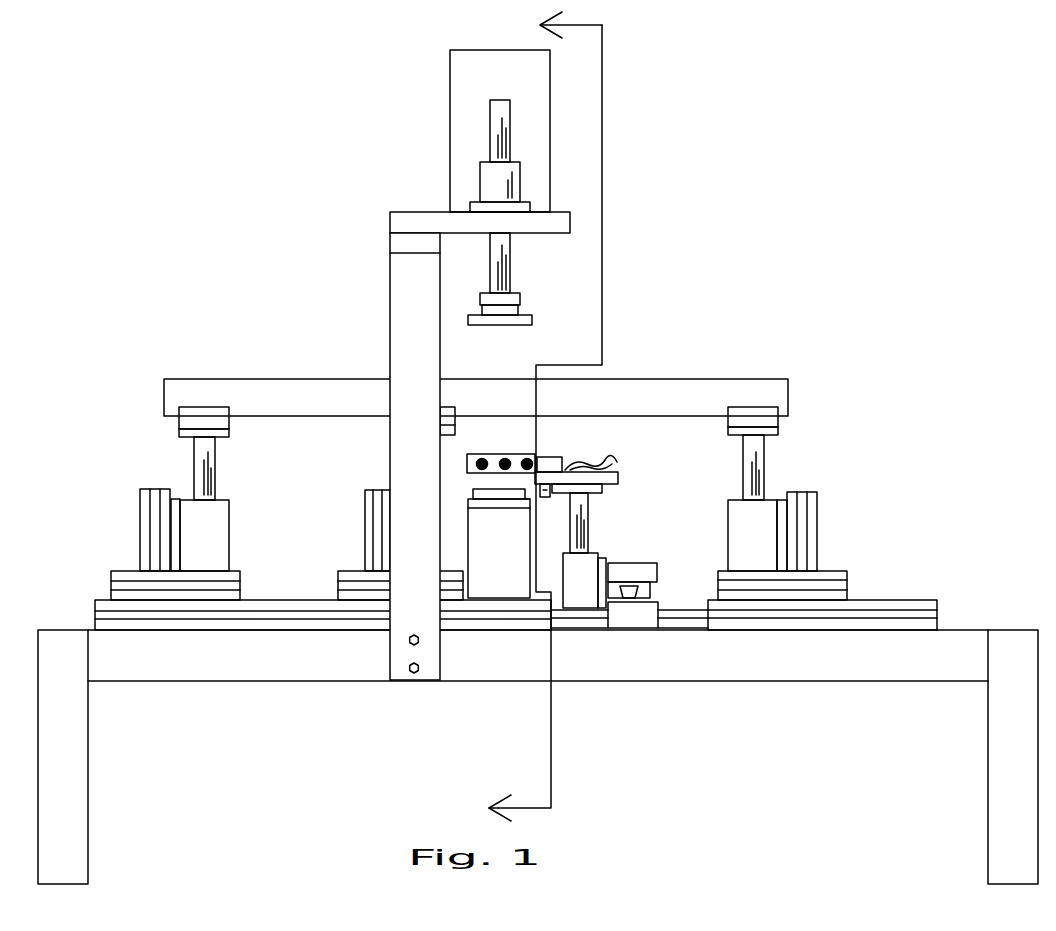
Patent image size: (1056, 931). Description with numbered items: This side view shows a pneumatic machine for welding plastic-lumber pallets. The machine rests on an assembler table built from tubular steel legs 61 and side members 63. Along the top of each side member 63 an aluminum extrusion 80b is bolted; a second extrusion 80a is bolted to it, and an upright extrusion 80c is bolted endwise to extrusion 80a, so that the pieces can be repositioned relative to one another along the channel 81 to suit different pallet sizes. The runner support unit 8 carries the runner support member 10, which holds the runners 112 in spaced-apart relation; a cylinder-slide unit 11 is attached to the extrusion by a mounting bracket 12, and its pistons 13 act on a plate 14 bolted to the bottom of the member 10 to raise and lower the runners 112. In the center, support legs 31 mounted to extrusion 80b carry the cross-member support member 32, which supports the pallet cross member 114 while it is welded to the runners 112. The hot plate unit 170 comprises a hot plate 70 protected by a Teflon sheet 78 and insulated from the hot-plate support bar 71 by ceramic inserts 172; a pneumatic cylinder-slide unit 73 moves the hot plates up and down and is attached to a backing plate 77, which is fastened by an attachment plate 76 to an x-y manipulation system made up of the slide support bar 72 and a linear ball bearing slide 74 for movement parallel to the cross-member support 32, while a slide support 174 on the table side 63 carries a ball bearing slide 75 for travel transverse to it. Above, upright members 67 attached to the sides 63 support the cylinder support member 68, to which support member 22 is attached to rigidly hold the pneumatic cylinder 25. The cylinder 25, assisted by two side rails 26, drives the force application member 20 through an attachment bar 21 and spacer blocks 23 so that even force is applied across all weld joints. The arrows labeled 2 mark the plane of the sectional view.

The section line 2- 2 is at (532, 416).
The runner support unit 8 is at (444, 386).
The runner support member 10 is at (226, 420).
The cylinder-slide unit 11 is at (478, 535).
The mounting bracket 12 is at (175, 499).
The pistons 13 is at (212, 452).
The plate 14 is at (180, 434).
The force application member 20 is at (501, 325).
The attachment bar 21 is at (520, 296).
The cylinder support member 22 is at (424, 217).
The spacer blocks 23 is at (524, 312).
The pneumatic cylinder 25 is at (538, 105).
The side rails 26 is at (493, 107).
The support legs 31 is at (499, 548).
The cross-member support member 32 is at (528, 502).
The legs 61 is at (84, 770).
The table side members 63 is at (573, 670).
The upright members 67 is at (396, 318).
The cylinder support member 68 is at (396, 246).
The hot plate 70 is at (555, 465).
The hot-plate support bar 71 is at (599, 479).
The x-y slide support bar 72 is at (641, 596).
The pneumatic cylinder-slide unit 73 is at (580, 550).
The linear ball bearing slide 74 is at (650, 590).
The ball bearing slide 75 is at (638, 628).
The attachment plate 76 is at (640, 575).
The backing plate 77 is at (603, 560).
The Teflon sheet 78 is at (500, 455).
The extrusion 80a is at (120, 577).
The extrusion 80b is at (305, 603).
The upright extrusion piece 80c is at (141, 490).
The channel 81 is at (152, 538).
The runners 112 is at (298, 381).
The pallet cross member 114 is at (496, 494).
The hot plate unit 170 is at (613, 544).
The ceramic inserts 172 is at (600, 463).
The slide support 174 is at (686, 628).